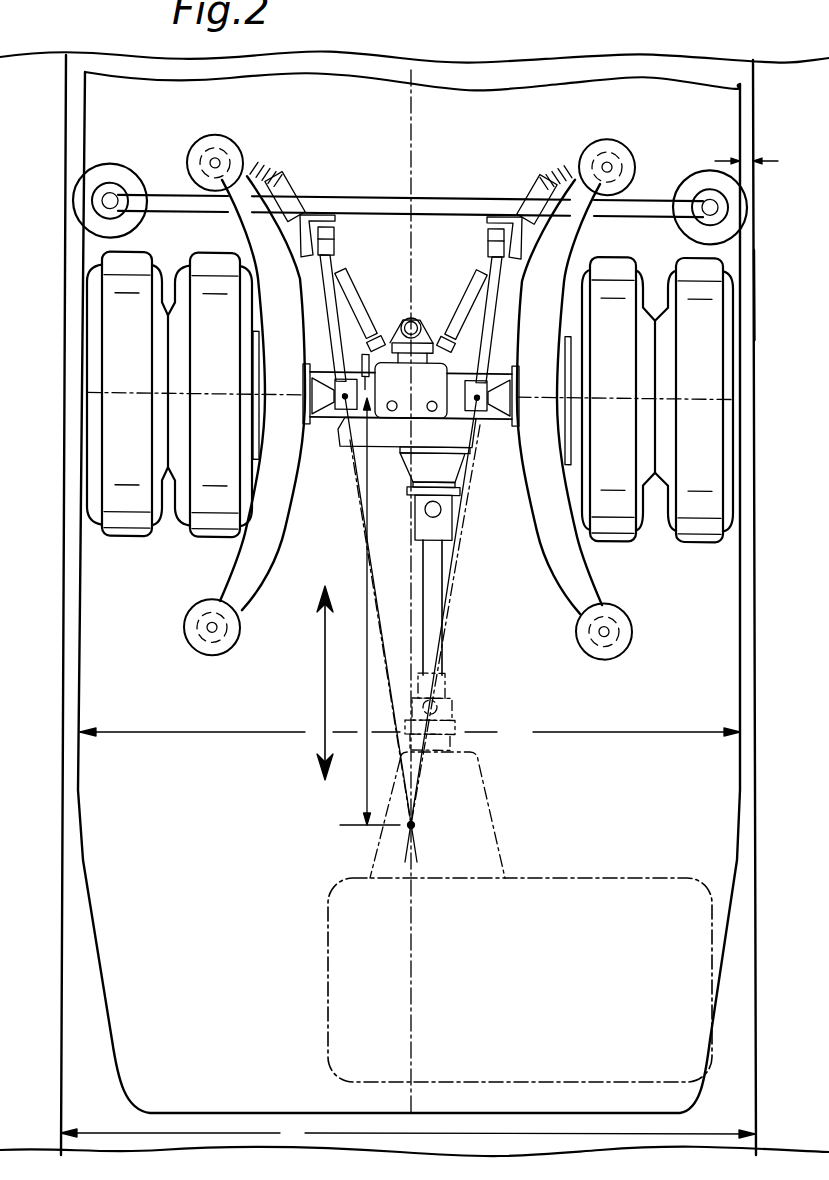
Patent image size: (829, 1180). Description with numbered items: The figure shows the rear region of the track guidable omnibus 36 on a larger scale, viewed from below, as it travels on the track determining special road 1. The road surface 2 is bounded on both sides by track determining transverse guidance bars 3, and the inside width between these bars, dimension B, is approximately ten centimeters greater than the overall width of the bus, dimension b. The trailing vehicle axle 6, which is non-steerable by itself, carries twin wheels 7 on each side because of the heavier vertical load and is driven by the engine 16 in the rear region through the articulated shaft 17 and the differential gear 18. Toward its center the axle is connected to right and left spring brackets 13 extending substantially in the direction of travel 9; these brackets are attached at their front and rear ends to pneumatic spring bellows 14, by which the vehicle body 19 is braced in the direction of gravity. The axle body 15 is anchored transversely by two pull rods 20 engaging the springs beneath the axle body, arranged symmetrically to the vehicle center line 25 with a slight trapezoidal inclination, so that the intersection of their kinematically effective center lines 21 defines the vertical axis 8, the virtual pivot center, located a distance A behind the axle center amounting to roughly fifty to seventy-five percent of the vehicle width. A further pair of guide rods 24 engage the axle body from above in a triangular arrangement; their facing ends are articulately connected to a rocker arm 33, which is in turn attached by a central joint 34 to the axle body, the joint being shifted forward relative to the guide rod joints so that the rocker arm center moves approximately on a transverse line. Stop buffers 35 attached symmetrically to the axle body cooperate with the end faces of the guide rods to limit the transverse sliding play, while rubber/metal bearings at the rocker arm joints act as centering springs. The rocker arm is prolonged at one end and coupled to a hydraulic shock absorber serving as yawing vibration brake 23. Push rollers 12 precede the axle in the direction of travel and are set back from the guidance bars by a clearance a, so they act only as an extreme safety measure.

The track determining special road 1 is at (405, 52).
The road surface 2 is at (335, 65).
The transverse guidance bars 3 is at (70, 110).
The trailing vehicle axle 6 is at (757, 297).
The twin wheels 7 is at (205, 540).
The vertical axis 8 is at (418, 823).
The direction of travel 9 is at (323, 688).
The push rollers 12 is at (115, 172).
The spring brackets 13 is at (290, 490).
The pneumatic spring bellows 14 is at (207, 142).
The axle body 15 is at (458, 478).
The engine 16 is at (580, 875).
The articulated shaft 17 is at (438, 588).
The differential gear 18 is at (400, 432).
The vehicle body 19 is at (290, 168).
The pull rods 20 is at (327, 313).
The kinematically effective center lines 21 is at (353, 488).
The yawing vibration brake 23 is at (360, 362).
The guide rods 24 is at (330, 243).
The vehicle center line 25 is at (420, 148).
The rocker arm 33 is at (402, 320).
The joint 34 is at (420, 323).
The stop buffers 35 is at (411, 391).
The omnibus 36 is at (523, 87).
The clearance a is at (747, 157).
The overall width of the omnibus b is at (410, 733).
The distance of vertical axis behind axle center A is at (365, 611).
The inside width between transverse guidance bars B is at (408, 1133).